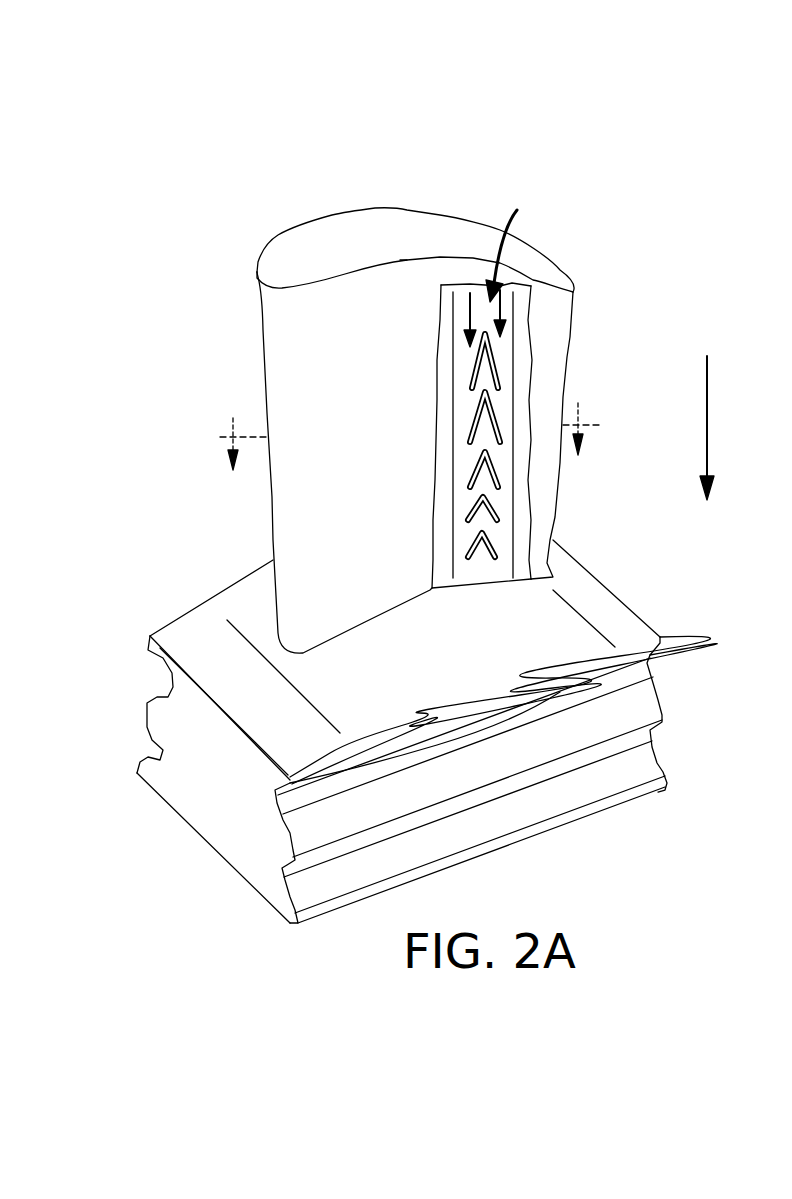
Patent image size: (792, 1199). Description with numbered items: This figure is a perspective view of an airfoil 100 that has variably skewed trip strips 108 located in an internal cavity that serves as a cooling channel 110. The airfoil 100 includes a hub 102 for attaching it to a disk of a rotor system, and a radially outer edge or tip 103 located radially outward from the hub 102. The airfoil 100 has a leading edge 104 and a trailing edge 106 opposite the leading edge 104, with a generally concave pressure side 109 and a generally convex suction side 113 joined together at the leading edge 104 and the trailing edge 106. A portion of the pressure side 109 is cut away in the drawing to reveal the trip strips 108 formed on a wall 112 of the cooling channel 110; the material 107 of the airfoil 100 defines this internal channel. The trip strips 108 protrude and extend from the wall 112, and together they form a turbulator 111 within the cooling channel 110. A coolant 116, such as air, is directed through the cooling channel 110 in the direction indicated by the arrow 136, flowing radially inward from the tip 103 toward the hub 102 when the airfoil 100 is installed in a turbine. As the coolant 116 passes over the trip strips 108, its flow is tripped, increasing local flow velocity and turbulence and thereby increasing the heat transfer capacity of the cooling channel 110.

The airfoil 100 is at (645, 220).
The hub 102 is at (640, 762).
The tip 103 is at (342, 233).
The leading edge 104 is at (266, 412).
The trailing edge 106 is at (565, 393).
The material 107 is at (523, 485).
The trip strips 108 is at (493, 347).
The pressure side 109 is at (406, 280).
The cooling channel 110 is at (522, 244).
The turbulator 111 is at (383, 338).
The wall 112 is at (470, 535).
The suction side 113 is at (402, 208).
The coolant 116 is at (468, 307).
The arrow 136 is at (707, 414).